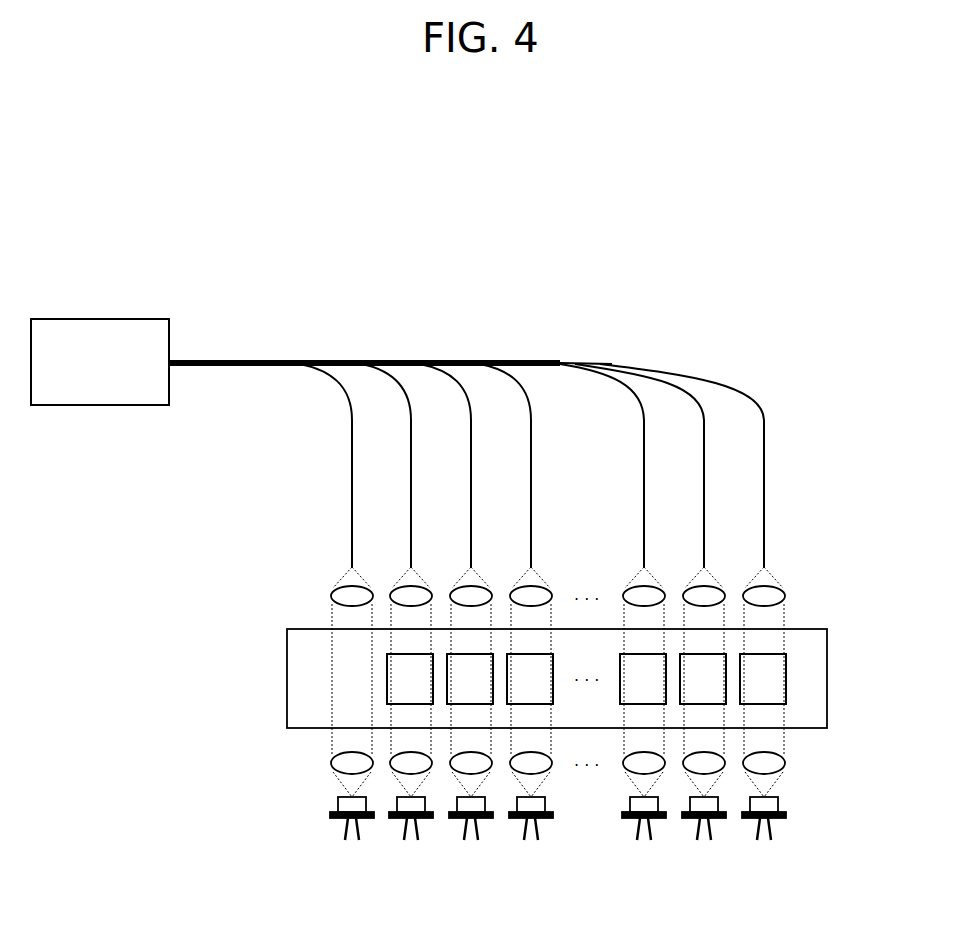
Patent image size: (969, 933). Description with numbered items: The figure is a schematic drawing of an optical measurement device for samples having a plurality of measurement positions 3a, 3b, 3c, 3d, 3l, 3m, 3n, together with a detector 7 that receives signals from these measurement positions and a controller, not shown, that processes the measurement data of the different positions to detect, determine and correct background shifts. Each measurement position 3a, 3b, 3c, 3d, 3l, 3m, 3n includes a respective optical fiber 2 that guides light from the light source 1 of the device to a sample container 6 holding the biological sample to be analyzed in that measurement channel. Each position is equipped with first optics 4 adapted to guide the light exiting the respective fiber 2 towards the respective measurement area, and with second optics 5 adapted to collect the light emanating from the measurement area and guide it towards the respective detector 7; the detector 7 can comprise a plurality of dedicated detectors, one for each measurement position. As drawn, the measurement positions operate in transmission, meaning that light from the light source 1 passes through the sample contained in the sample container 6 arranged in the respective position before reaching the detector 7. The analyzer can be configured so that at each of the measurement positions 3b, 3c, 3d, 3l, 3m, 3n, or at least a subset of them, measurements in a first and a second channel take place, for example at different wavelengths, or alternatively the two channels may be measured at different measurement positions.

The light source 1 is at (152, 342).
The optical fiber 2 is at (330, 360).
The measurement position 3a is at (343, 678).
The measurement position 3b is at (402, 613).
The measurement position 3c is at (466, 613).
The measurement position 3d is at (526, 613).
The measurement position 3l is at (637, 613).
The measurement position 3m is at (698, 613).
The measurement position 3n is at (773, 643).
The first optics 4 is at (318, 595).
The second optics 5 is at (308, 763).
The sample container 6 is at (766, 680).
The detector 7 is at (360, 845).